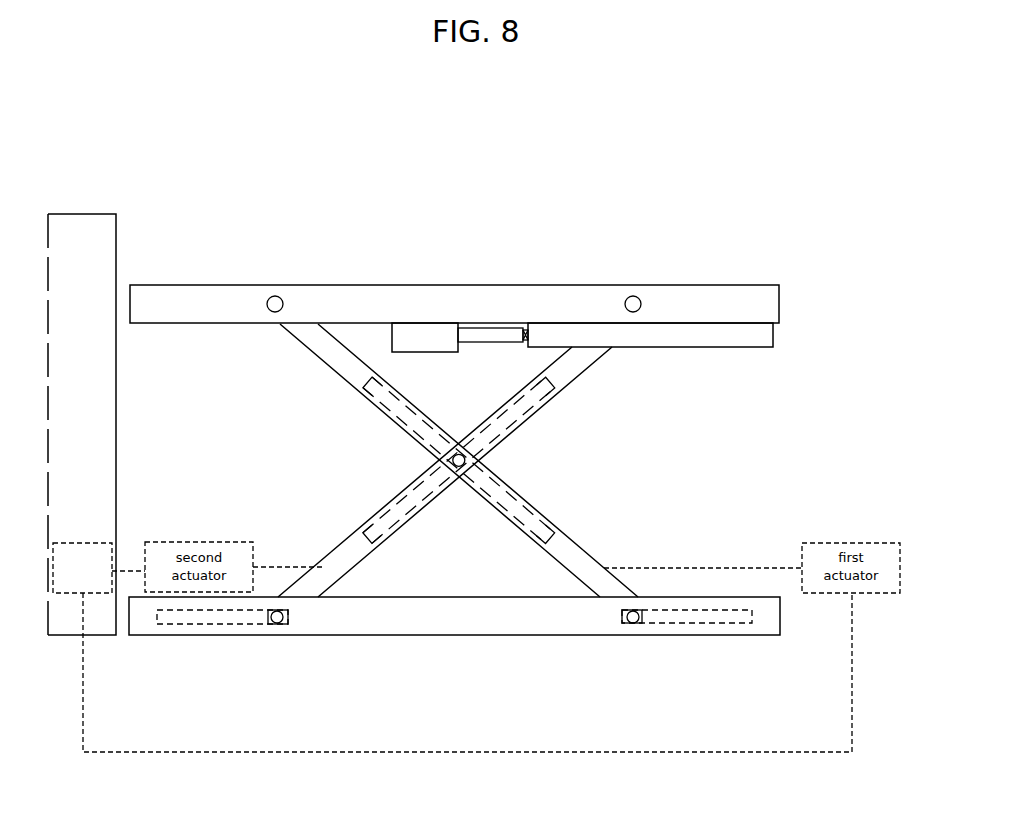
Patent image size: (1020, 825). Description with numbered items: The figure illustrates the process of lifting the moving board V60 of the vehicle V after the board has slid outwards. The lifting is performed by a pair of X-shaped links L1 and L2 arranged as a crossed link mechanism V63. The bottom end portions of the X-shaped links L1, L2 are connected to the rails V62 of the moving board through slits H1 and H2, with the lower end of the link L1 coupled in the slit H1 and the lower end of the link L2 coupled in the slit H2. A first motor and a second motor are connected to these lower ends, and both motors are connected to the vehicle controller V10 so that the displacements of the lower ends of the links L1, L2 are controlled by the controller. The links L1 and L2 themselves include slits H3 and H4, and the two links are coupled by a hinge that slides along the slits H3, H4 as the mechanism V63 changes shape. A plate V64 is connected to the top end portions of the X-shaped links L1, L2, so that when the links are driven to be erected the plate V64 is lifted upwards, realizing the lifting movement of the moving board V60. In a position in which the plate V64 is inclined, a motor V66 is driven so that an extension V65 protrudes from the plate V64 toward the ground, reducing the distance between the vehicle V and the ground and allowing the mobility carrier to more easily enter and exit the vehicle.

The vehicle V is at (83, 218).
The vehicle controller V10 is at (82, 568).
The moving board V60 is at (454, 443).
The rails V62 is at (454, 663).
The X-shaped link assembly V63 is at (458, 460).
The plate V64 is at (568, 298).
The extension V65 is at (737, 340).
The motor V66 is at (423, 332).
The first X-shaped link L1 is at (330, 363).
The second X-shaped link L2 is at (583, 360).
The first slit H1 is at (213, 622).
The second slit H2 is at (693, 625).
The third slit H3 is at (592, 568).
The fourth slit H4 is at (330, 563).